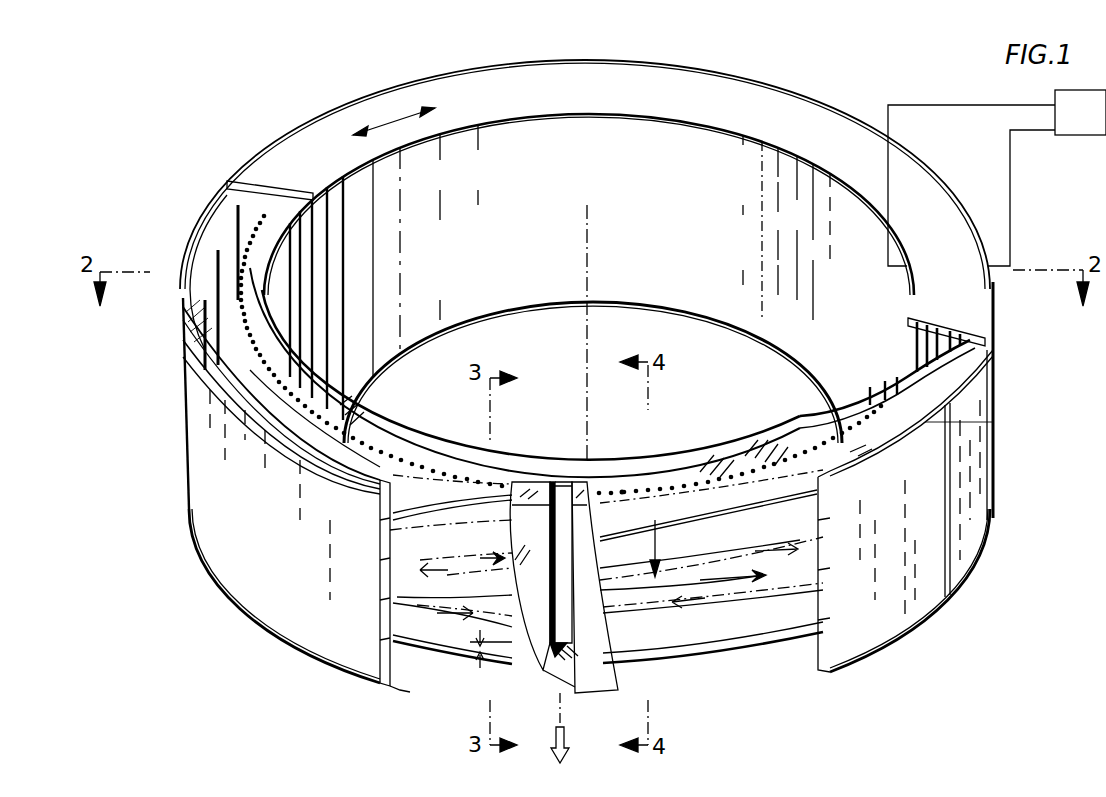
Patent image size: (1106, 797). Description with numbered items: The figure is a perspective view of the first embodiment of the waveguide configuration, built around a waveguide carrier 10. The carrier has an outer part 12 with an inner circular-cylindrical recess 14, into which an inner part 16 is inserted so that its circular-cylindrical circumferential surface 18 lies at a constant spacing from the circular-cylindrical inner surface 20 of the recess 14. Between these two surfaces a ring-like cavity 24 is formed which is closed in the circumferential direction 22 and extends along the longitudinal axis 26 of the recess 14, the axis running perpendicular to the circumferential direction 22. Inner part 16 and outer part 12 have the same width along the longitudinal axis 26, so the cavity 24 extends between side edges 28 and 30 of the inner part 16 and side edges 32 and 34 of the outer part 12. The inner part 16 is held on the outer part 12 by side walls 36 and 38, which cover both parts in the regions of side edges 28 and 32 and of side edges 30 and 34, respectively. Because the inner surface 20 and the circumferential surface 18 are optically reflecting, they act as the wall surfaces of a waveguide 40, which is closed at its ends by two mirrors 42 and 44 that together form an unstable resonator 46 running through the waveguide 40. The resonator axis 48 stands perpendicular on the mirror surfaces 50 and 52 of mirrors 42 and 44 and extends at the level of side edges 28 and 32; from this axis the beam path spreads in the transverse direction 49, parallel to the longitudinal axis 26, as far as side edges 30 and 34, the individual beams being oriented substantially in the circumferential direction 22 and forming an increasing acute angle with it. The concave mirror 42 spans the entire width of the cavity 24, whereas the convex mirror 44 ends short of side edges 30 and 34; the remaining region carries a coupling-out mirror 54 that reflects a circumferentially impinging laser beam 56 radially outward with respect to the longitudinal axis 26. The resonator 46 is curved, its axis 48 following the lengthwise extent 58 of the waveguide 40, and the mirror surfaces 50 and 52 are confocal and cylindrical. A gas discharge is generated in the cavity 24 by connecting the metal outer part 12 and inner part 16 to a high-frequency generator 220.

The waveguide carrier 10 is at (268, 132).
The outer part 12 is at (994, 378).
The inner circular-cylindrical recess 14 is at (230, 236).
The inner part 16 is at (880, 370).
The circular-cylindrical circumferential surface 18 is at (780, 447).
The circular-cylindrical inner surface 20 is at (262, 207).
The circumferential direction 22 is at (400, 112).
The ring-like cavity 24 is at (925, 422).
The longitudinal axis 26 is at (590, 262).
The side edge 28 is at (713, 463).
The side edge 30 is at (713, 653).
The side edge 32 is at (852, 452).
The side edge 34 is at (810, 660).
The side wall 36 is at (780, 106).
The side wall 38 is at (407, 662).
The waveguide 40 is at (368, 462).
The mirror 42 is at (598, 668).
The mirror 44 is at (537, 597).
The resonator 46 is at (500, 557).
The resonator axis 48 is at (622, 490).
The transverse direction 49 is at (657, 543).
The mirror surface 50 is at (593, 557).
The mirror surface 52 is at (510, 540).
The coupling-out mirror 54 is at (541, 668).
The laser beam 56 is at (447, 670).
The lengthwise extent 58 is at (735, 580).
The high-frequency generator 220 is at (997, 178).